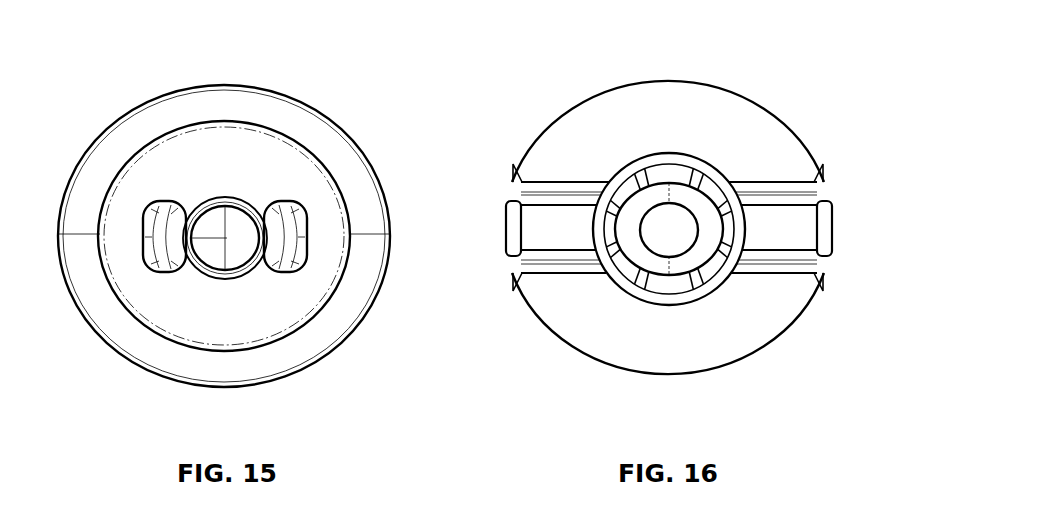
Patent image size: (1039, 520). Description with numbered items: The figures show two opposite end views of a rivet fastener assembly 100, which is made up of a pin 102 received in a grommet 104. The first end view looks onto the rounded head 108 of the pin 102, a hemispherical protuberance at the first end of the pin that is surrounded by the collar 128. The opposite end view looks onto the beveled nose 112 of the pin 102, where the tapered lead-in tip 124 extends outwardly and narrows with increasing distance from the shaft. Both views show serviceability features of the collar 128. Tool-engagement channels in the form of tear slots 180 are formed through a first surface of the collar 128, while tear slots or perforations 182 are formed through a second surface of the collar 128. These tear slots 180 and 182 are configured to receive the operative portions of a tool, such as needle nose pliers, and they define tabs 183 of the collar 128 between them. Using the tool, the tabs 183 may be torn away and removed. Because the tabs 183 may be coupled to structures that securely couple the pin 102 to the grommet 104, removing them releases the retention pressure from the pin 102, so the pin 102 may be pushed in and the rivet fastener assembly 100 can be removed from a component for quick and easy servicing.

In FIG. 15, the rivet fastener assembly 100 is at (68, 341).
In FIG. 16, the rivet fastener assembly 100 is at (870, 133).
In FIG. 15, the pin 102 is at (232, 227).
In FIG. 16, the pin 102 is at (684, 267).
In FIG. 15, the grommet 104 is at (218, 166).
In FIG. 16, the grommet 104 is at (664, 104).
In FIG. 15, the rounded head 108 is at (222, 257).
In FIG. 16, the beveled nose 112 is at (687, 203).
In FIG. 16, the tapered tip 124 is at (657, 240).
In FIG. 15, the collar 128 is at (352, 317).
In FIG. 16, the collar 128 is at (624, 112).
In FIG. 15, the tear slots 180 is at (157, 203).
In FIG. 16, the tear slots or perforations 182 is at (568, 250).
In FIG. 16, the tabs 183 is at (505, 231).